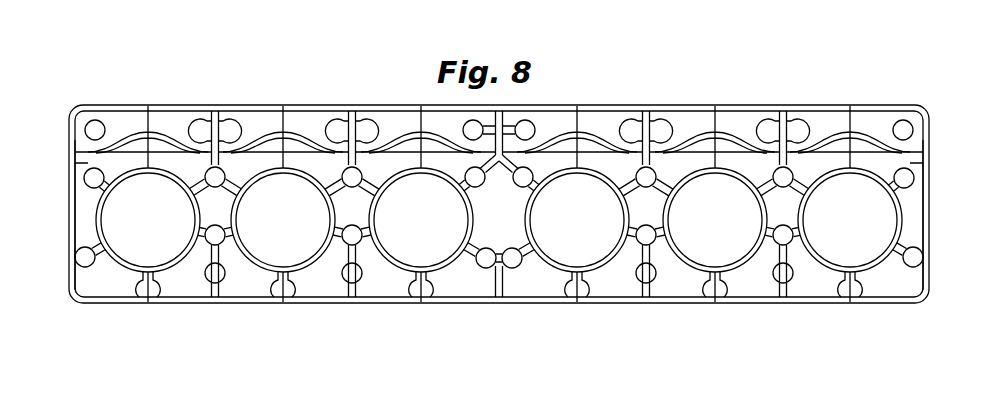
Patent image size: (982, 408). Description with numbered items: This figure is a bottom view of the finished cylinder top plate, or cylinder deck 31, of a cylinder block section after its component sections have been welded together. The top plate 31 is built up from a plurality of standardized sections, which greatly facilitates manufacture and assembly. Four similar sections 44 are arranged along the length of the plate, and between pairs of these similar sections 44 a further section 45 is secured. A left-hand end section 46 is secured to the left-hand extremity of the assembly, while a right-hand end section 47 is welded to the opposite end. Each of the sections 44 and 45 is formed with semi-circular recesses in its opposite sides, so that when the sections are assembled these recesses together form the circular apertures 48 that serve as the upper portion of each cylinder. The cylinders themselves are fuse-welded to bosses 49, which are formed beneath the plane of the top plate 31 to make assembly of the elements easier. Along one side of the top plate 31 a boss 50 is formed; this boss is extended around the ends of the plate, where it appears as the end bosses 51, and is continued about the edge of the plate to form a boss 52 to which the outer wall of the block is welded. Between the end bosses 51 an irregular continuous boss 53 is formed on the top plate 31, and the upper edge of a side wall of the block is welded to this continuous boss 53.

The top plate 31 is at (355, 105).
The similar sections 44 is at (242, 282).
The section 45 is at (470, 283).
The left-hand end section 46 is at (110, 283).
The right-hand end section 47 is at (880, 293).
The apertures 48 is at (563, 262).
The bosses 49 is at (400, 277).
The boss 50 is at (680, 288).
The end bosses 51 is at (75, 215).
The boss 52 is at (668, 110).
The irregular continuous boss 53 is at (820, 152).